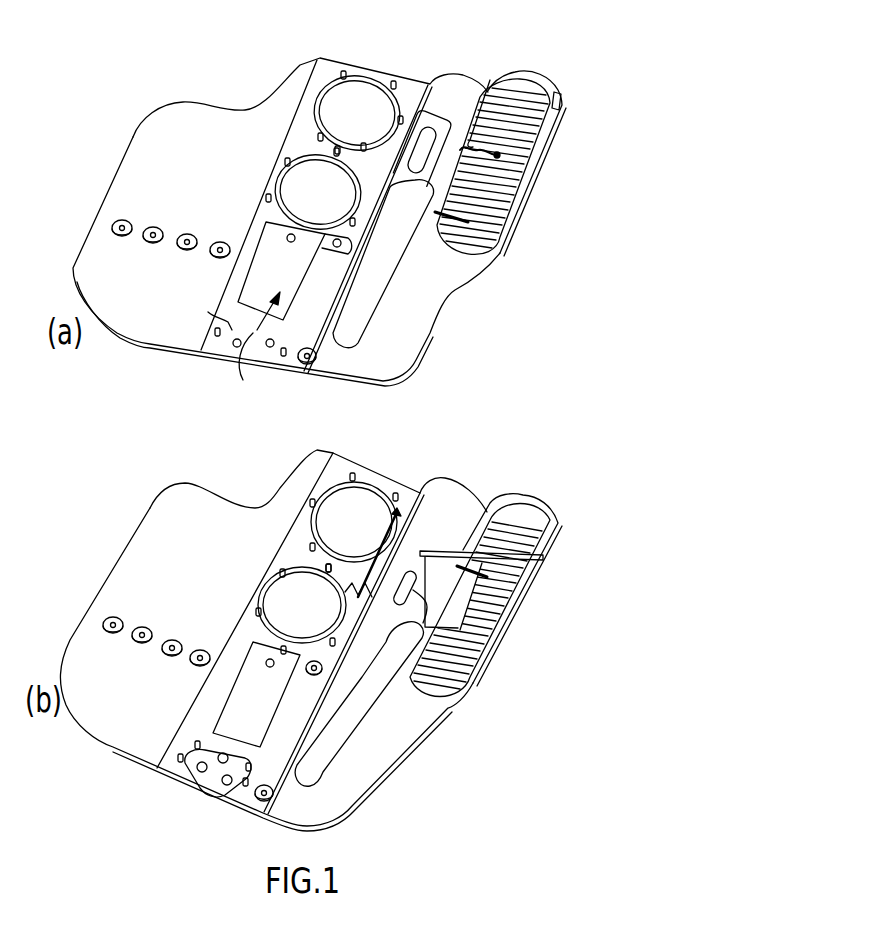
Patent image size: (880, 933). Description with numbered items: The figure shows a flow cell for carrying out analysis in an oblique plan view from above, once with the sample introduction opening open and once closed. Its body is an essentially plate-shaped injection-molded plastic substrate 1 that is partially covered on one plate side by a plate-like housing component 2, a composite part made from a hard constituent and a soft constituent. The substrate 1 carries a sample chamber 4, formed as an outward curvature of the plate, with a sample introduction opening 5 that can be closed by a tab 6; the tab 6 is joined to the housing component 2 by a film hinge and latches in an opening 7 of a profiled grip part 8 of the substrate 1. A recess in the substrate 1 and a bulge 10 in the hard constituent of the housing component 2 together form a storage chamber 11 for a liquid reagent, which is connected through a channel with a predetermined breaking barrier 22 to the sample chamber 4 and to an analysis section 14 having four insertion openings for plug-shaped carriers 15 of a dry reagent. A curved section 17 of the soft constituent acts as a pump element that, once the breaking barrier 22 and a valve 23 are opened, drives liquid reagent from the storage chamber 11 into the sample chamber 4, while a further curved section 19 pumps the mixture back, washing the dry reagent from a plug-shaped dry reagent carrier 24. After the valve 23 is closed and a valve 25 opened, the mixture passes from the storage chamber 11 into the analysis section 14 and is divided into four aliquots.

The substrate 1 is at (163, 332).
The housing component 2 is at (413, 83).
The sample chamber 4 is at (397, 243).
The sample introduction opening 5 is at (410, 642).
The tab 6 is at (500, 156).
The opening 7 is at (473, 593).
The profiled grip part 8 is at (536, 112).
The bulge 10 is at (230, 707).
The storage chamber 11 is at (270, 337).
The analysis section 14 is at (148, 153).
The plug-shaped carriers 15 is at (120, 226).
The curved section 17 is at (293, 190).
The curved section 19 is at (350, 112).
The predetermined breaking barrier 22 is at (228, 320).
The valve 23 is at (285, 357).
The plug-shaped dry reagent carrier 24 is at (318, 358).
The valve 25 is at (220, 350).